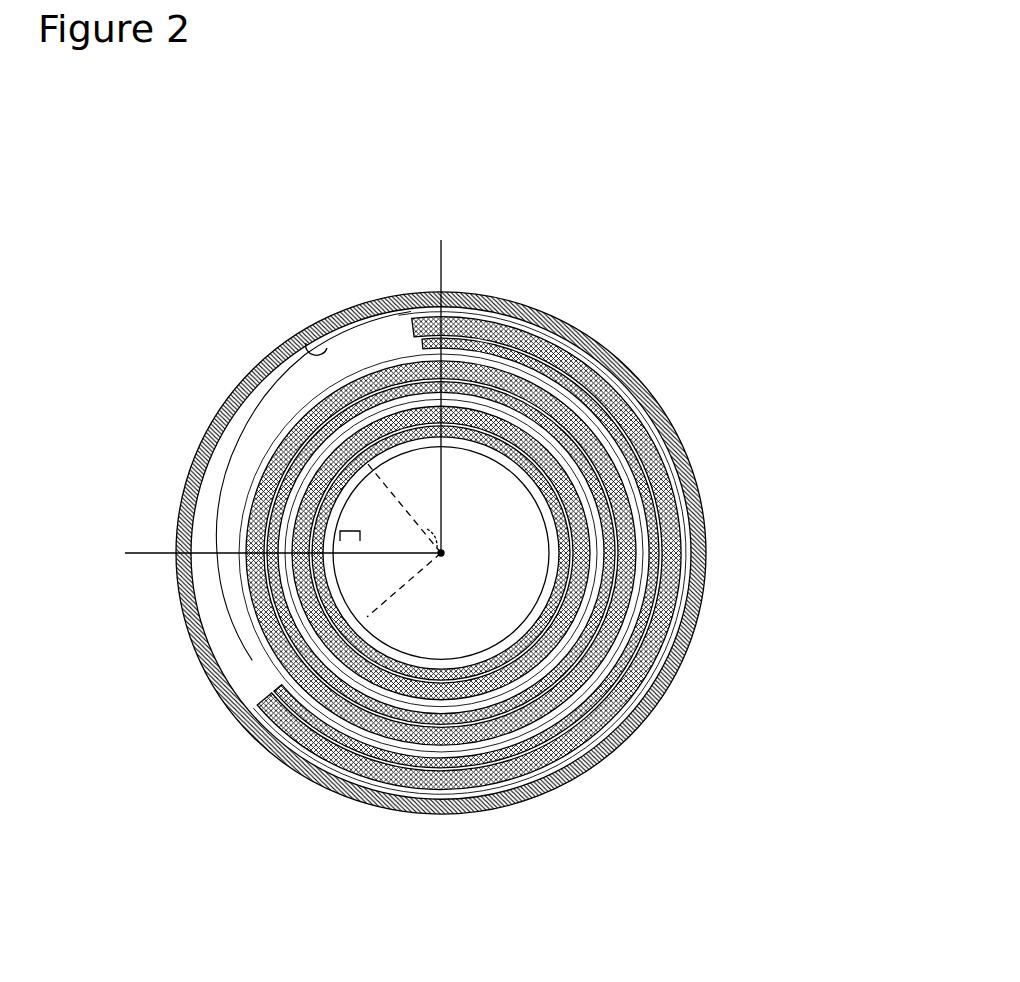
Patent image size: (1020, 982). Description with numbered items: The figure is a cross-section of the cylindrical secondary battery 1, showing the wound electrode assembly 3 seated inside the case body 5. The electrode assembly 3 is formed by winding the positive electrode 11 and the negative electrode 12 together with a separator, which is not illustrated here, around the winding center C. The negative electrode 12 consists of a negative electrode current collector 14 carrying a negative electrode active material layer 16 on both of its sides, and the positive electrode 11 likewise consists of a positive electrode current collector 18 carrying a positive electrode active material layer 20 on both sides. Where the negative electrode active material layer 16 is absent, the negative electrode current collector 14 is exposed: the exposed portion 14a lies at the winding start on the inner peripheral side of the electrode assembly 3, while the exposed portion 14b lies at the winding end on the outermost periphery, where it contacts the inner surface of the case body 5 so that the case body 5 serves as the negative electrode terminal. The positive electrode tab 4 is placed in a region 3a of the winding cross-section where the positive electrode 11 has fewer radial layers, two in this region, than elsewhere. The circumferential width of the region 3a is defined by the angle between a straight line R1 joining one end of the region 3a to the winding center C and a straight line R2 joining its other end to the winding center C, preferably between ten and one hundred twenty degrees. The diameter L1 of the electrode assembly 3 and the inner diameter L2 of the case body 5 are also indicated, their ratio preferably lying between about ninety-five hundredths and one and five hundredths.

The cylindrical secondary battery 1 is at (641, 253).
The electrode assembly 3 is at (222, 632).
The region 3a is at (243, 462).
The positive electrode tab 4 is at (389, 357).
The case body 5 is at (231, 392).
The positive electrode 11 is at (787, 350).
The negative electrode 12 is at (842, 575).
The negative electrode current collector 14 is at (702, 590).
The exposed portion of the negative electrode current collector 14a is at (352, 521).
The exposed portion of the negative electrode current collector 14b is at (306, 341).
The negative electrode active material layer 16 is at (697, 624).
The positive electrode current collector 18 is at (678, 438).
The positive electrode active material layer 20 is at (694, 476).
The winding center C is at (448, 554).
The straight line R1 is at (133, 557).
The straight line R2 is at (446, 256).
The diameter of the electrode assembly L1 is at (401, 488).
The inner diameter of the case body L2 is at (407, 621).